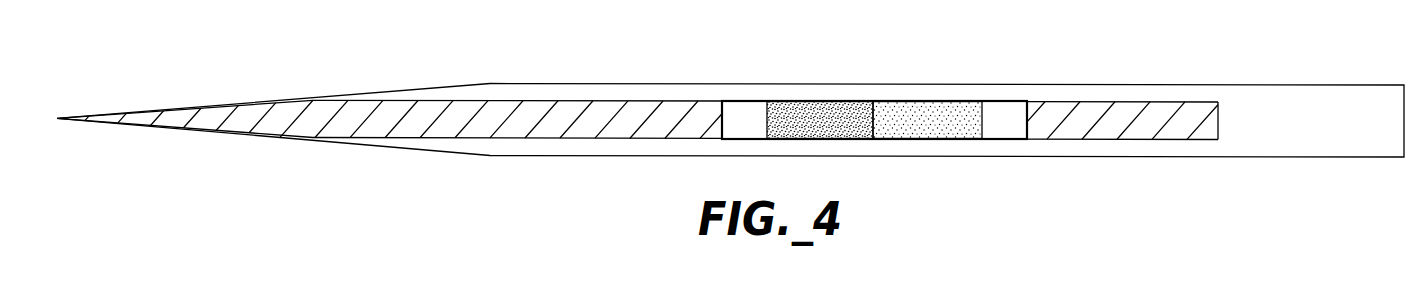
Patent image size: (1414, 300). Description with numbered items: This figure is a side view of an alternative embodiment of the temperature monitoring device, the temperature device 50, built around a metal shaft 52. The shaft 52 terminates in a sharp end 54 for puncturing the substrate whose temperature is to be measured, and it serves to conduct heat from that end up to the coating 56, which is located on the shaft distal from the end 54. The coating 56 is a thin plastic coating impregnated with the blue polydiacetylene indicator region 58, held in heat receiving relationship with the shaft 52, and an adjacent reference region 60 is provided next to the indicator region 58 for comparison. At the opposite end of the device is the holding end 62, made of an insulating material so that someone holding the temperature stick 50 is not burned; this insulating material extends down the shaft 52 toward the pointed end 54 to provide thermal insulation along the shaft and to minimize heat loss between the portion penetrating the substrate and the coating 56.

The temperature device 50 is at (744, 36).
The metal shaft 52 is at (245, 113).
The sharp end 54 is at (57, 117).
The coating 56 is at (738, 105).
The blue polydiacetylene indicator region 58 is at (785, 141).
The reference region 60 is at (888, 142).
The holding end 62 is at (1291, 83).